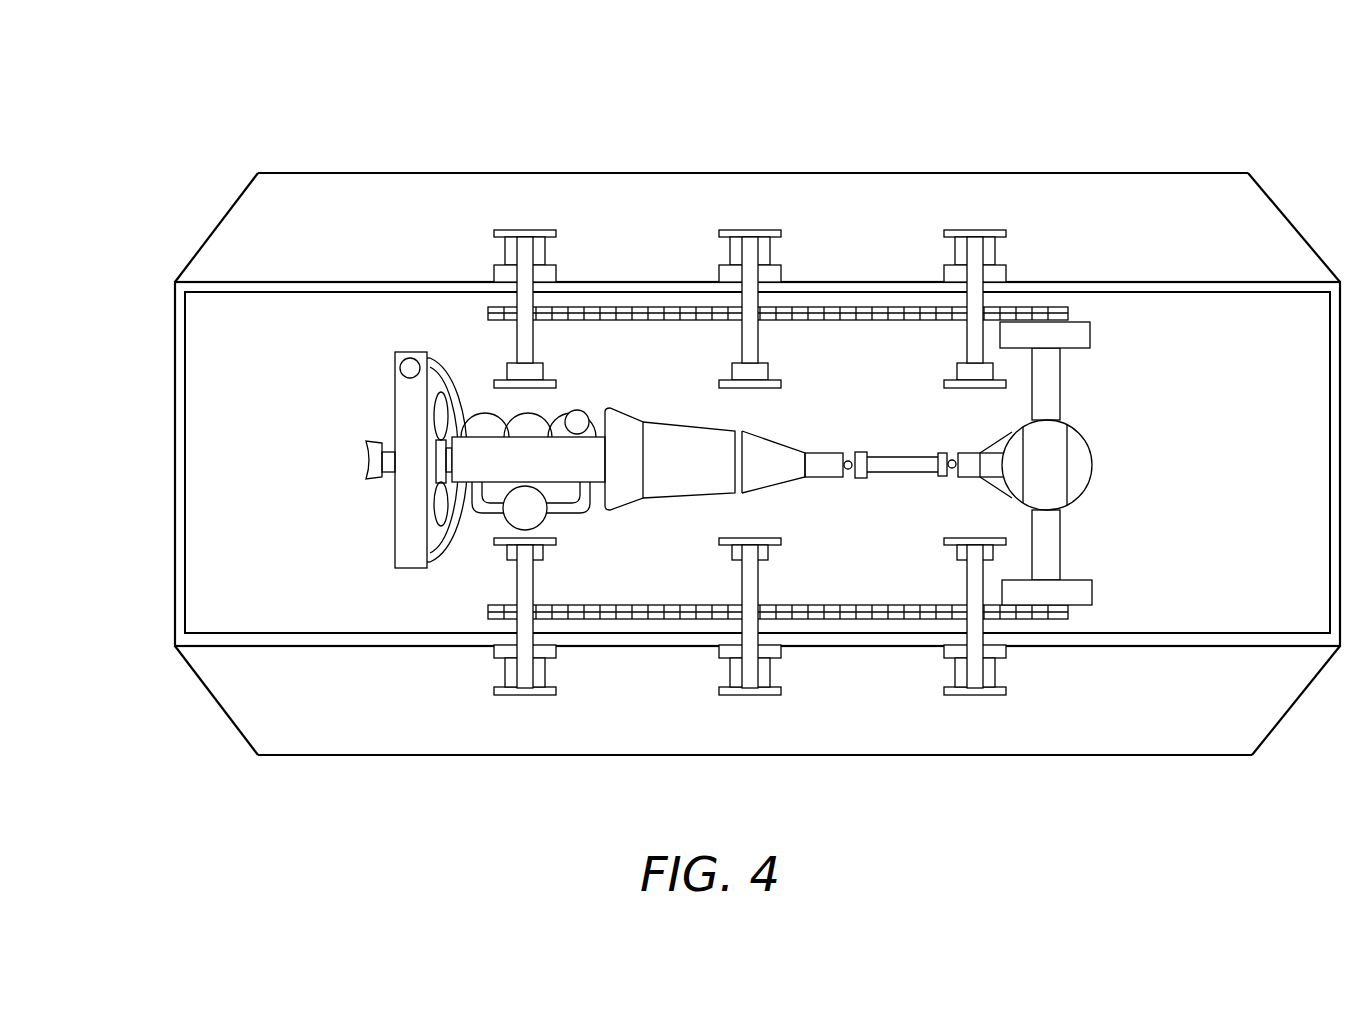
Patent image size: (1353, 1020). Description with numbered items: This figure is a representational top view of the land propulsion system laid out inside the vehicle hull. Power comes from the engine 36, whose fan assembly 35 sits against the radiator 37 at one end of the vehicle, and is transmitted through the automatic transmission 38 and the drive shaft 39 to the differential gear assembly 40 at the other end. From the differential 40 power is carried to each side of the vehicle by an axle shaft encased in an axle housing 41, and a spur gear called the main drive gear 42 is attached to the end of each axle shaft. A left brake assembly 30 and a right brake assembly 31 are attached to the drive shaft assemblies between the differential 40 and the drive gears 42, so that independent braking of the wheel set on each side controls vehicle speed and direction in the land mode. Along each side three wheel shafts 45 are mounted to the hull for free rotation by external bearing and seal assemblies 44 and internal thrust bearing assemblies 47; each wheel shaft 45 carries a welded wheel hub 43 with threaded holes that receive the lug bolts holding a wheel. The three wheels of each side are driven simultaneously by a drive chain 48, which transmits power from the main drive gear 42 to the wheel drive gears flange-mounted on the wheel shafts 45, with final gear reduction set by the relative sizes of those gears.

The left brake assembly 30 is at (1096, 588).
The right brake assembly 31 is at (1096, 336).
The fan assembly 35 is at (437, 387).
The engine 36 is at (538, 412).
The radiator 37 is at (395, 354).
The automatic transmission 38 is at (719, 422).
The drive shaft 39 is at (920, 476).
The differential gear assembly 40 is at (1091, 442).
The axle housing 41 is at (1066, 386).
The main drive gear 42 is at (1050, 305).
The wheel hub 43 is at (500, 226).
The external bearing and seal assembly 44 is at (546, 254).
The wheel shaft 45 is at (535, 373).
The internal thrust bearing assembly 47 is at (718, 375).
The drive chain 48 is at (830, 324).